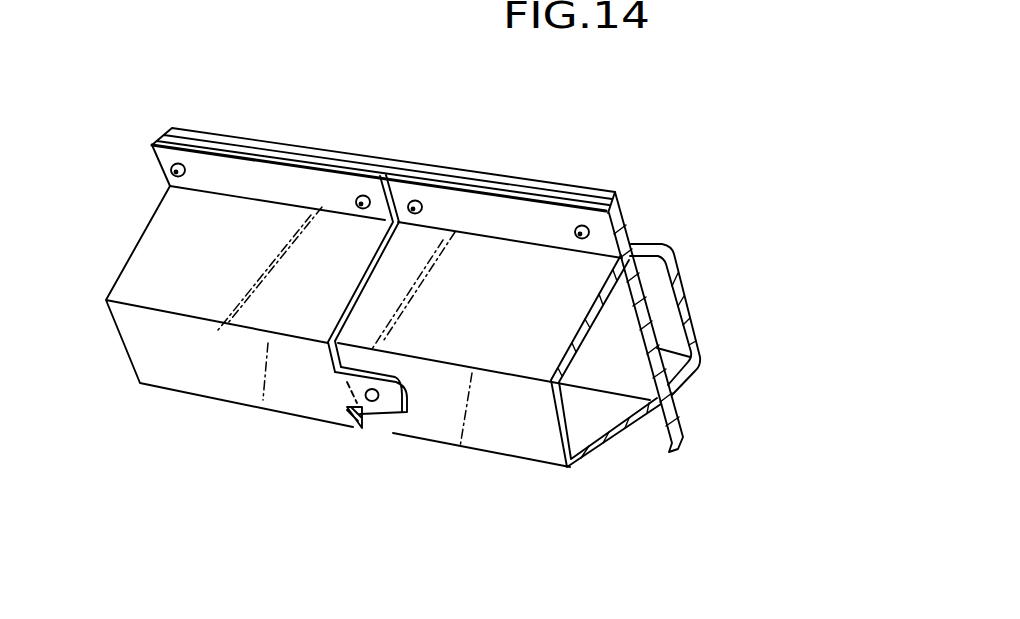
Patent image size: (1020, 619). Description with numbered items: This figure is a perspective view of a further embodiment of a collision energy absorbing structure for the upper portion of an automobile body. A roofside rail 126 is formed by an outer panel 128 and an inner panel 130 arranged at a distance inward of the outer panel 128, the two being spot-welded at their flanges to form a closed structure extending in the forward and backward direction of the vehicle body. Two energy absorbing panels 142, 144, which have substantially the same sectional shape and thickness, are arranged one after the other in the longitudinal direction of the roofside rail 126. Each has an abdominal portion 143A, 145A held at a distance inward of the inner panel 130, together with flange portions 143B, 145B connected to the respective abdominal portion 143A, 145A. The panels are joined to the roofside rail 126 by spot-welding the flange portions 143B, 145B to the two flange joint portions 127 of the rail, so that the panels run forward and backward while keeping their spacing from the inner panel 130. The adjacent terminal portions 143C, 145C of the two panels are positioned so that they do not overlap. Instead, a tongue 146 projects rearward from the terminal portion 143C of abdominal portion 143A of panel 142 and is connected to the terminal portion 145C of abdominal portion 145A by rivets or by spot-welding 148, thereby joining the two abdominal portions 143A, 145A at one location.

The energy absorbing panel 142 is at (305, 217).
The flange portion 143B is at (232, 172).
The abdominal portion 143A is at (180, 363).
The terminal portion 143C is at (330, 413).
The tongue 146 is at (348, 416).
The flange portion 145B is at (450, 200).
The terminal portion 145C is at (368, 424).
The spot-welding 148 is at (379, 402).
The energy absorbing panel 144 is at (512, 240).
The abdominal portion 145A is at (508, 443).
The flange joint portion 127 is at (622, 200).
The roofside rail 126 is at (686, 235).
The outer panel 128 is at (685, 283).
The inner panel 130 is at (655, 320).